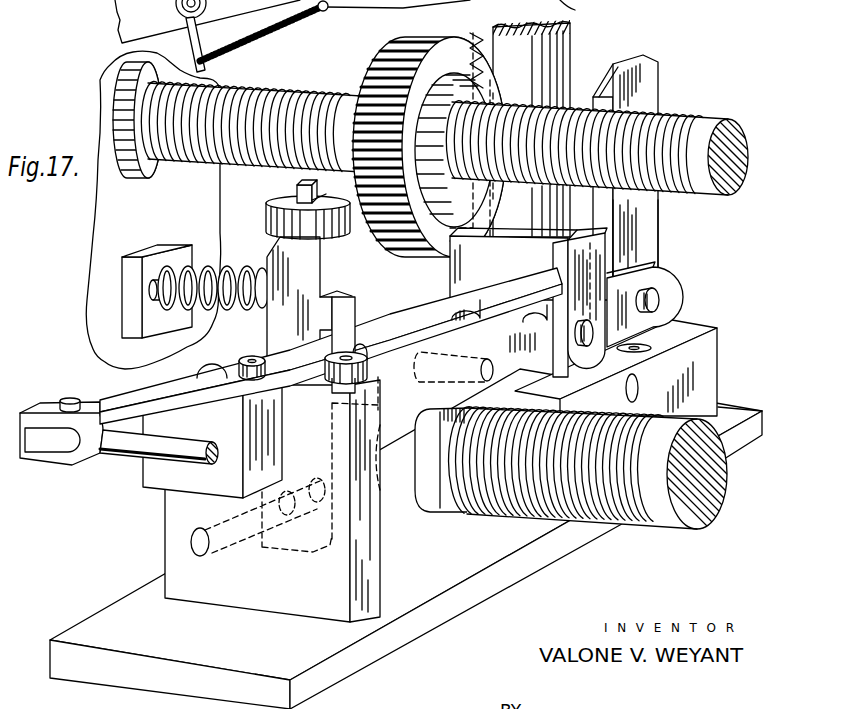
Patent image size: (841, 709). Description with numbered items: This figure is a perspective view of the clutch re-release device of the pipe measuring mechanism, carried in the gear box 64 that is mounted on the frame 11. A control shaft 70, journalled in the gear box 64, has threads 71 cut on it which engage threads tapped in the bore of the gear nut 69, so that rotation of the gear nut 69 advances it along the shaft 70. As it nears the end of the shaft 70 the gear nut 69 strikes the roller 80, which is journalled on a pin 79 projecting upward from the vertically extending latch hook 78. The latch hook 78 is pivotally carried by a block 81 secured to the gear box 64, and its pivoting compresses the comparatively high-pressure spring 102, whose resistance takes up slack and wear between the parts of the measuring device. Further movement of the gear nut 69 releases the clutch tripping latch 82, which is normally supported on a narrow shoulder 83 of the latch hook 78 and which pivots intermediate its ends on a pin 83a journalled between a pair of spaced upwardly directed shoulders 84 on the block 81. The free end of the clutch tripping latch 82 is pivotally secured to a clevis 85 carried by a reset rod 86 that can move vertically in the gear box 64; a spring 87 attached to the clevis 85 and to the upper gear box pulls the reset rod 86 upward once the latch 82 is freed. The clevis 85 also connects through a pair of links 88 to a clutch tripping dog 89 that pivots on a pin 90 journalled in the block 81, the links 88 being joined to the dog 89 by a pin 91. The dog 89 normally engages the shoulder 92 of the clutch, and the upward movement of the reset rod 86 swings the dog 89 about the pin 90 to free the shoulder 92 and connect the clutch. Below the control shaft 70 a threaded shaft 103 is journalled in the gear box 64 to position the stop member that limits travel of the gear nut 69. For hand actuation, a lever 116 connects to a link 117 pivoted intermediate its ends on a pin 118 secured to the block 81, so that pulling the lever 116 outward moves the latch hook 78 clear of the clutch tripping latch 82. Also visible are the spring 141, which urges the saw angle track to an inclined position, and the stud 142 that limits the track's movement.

The frame 11 is at (567, 0).
The gear box 64 is at (97, 246).
The gear nut 69 is at (455, 40).
The control shaft 70 is at (748, 118).
The threads 71 is at (310, 94).
The latch hook 78 is at (330, 278).
The pin 79 is at (295, 181).
The roller 80 is at (340, 232).
The block 81 is at (165, 520).
The clutch tripping latch 82 is at (433, 324).
The shoulder 83 is at (332, 447).
The pin 83a is at (494, 372).
The shoulders 84 is at (388, 320).
The clevis 85 is at (576, 236).
The reset rod 86 is at (566, 48).
The spring 87 is at (483, 35).
The links 88 is at (650, 270).
The clutch tripping dog 89 is at (656, 233).
The pin 90 is at (638, 389).
The pin 91 is at (667, 297).
The shoulder 92 is at (636, 62).
The spring 102 is at (228, 318).
The threaded shaft 103 is at (703, 512).
The lever 116 is at (133, 442).
The link 117 is at (125, 402).
The pin 118 is at (253, 357).
The spring 141 is at (231, 46).
The stud 142 is at (402, 0).